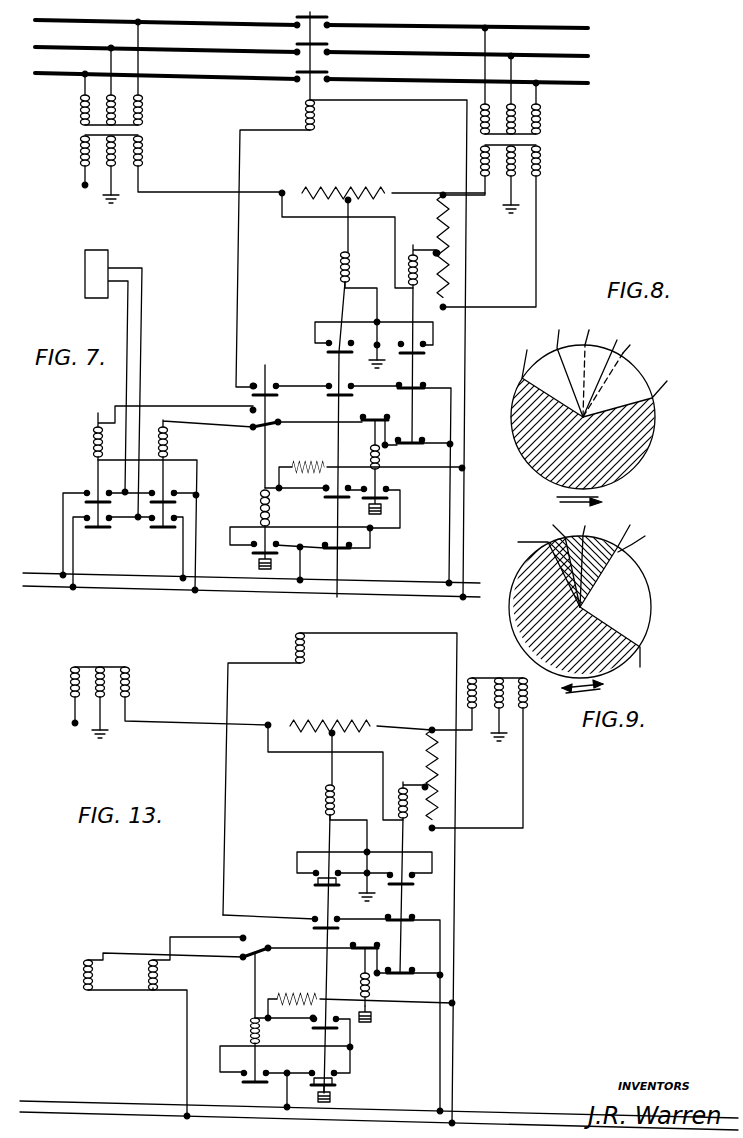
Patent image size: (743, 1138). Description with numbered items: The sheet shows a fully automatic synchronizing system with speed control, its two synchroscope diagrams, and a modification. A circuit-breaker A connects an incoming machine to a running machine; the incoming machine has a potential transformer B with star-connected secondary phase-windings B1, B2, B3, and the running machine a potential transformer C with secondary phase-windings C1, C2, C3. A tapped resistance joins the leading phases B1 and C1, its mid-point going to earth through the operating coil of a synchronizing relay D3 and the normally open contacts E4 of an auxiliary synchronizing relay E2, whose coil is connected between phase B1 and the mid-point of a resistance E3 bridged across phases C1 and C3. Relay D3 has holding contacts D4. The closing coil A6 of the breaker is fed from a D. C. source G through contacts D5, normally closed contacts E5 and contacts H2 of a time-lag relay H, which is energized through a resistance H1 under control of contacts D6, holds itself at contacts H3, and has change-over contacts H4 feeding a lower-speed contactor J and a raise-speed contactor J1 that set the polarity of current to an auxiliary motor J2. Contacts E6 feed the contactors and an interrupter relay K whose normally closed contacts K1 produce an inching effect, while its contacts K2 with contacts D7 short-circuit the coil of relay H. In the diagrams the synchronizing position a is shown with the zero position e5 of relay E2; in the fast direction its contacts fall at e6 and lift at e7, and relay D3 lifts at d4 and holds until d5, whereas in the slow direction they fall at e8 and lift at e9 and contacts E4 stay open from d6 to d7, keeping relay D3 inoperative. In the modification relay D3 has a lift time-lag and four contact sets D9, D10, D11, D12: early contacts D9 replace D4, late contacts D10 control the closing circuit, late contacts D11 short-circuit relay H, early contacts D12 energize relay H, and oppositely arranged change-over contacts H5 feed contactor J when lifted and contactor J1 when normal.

In FIG. 7, the circuit-breaker A is at (300, 73).
In FIG. 7, the closing coil A6 is at (317, 116).
In FIG. 13, the closing coil A6 is at (296, 650).
In FIG. 7, the potential transformer B is at (82, 128).
In FIG. 7, the secondary phase-winding B1 is at (143, 142).
In FIG. 13, the secondary phase-winding B1 is at (130, 687).
In FIG. 7, the secondary phase-winding B2 is at (100, 155).
In FIG. 13, the secondary phase-winding B2 is at (103, 675).
In FIG. 7, the secondary phase-winding B3 is at (78, 147).
In FIG. 13, the secondary phase-winding B3 is at (73, 677).
In FIG. 7, the potential transformer C is at (538, 139).
In FIG. 7, the secondary phase-winding C1 is at (483, 163).
In FIG. 13, the secondary phase-winding C1 is at (472, 692).
In FIG. 7, the secondary phase-winding C2 is at (537, 163).
In FIG. 13, the secondary phase-winding C2 is at (501, 705).
In FIG. 7, the secondary phase-winding C3 is at (538, 150).
In FIG. 13, the secondary phase-winding C3 is at (527, 695).
In FIG. 7, the synchronizing relay D3 is at (337, 267).
In FIG. 13, the synchronizing relay D3 is at (320, 792).
In FIG. 7, the holding contacts D4 is at (327, 343).
In FIG. 7, the normally open contacts D5 is at (327, 390).
In FIG. 7, the contacts D6 is at (346, 575).
In FIG. 7, the contacts D7 is at (323, 500).
In FIG. 13, the early-acting contacts D9 is at (313, 873).
In FIG. 13, the late-acting contacts D10 is at (313, 920).
In FIG. 13, the late-acting contacts D11 is at (343, 1022).
In FIG. 13, the early-acting contacts D12 is at (350, 1072).
In FIG. 7, the auxiliary synchronizing relay E2 is at (418, 268).
In FIG. 13, the auxiliary synchronizing relay E2 is at (405, 802).
In FIG. 7, the resistance E3 is at (447, 232).
In FIG. 13, the resistance E3 is at (434, 765).
In FIG. 7, the normally open contacts E4 is at (425, 350).
In FIG. 13, the normally open contacts E4 is at (420, 884).
In FIG. 7, the normally closed contacts E5 is at (420, 384).
In FIG. 13, the normally closed contacts E5 is at (415, 918).
In FIG. 7, the contacts E6 is at (418, 440).
In FIG. 13, the contacts E6 is at (413, 975).
In FIG. 7, the auxiliary source of D. C. supply G is at (47, 578).
In FIG. 13, the auxiliary source of D. C. supply G is at (67, 1112).
In FIG. 7, the time-lag relay H is at (260, 498).
In FIG. 13, the time-lag relay H is at (252, 1022).
In FIG. 7, the resistance H1 is at (317, 464).
In FIG. 13, the resistance H1 is at (315, 996).
In FIG. 7, the normally open contacts H2 is at (290, 416).
In FIG. 7, the holding contacts H3 is at (253, 562).
In FIG. 13, the holding contacts H3 is at (233, 1087).
In FIG. 7, the change-over contacts H4 is at (260, 429).
In FIG. 13, the change-over contacts H5 is at (243, 938).
In FIG. 7, the lower-speed contactor J is at (168, 430).
In FIG. 13, the lower-speed contactor J is at (148, 978).
In FIG. 7, the raise-speed contactor J1 is at (95, 431).
In FIG. 13, the raise-speed contactor J1 is at (80, 968).
In FIG. 7, the auxiliary motor J2 is at (90, 265).
In FIG. 7, the interrupter relay K is at (358, 453).
In FIG. 13, the interrupter relay K is at (367, 983).
In FIG. 7, the normally closed contacts K1 is at (381, 413).
In FIG. 13, the normally closed contacts K1 is at (368, 945).
In FIG. 7, the normally open contacts K2 is at (390, 502).
In FIG. 8, the synchronizing position a is at (592, 362).
In FIG. 9, the synchronizing position a is at (590, 557).
In FIG. 9, the contact-lift position d4 is at (538, 569).
In FIG. 9, the normal fall position d5 is at (642, 536).
In FIG. 8, the inoperative-period start d6 is at (611, 365).
In FIG. 8, the inoperative-period end d7 is at (570, 362).
In FIG. 8, the zero position e5 is at (615, 380).
In FIG. 9, the zero position e5 is at (612, 555).
In FIG. 9, the contact-fall position e6 is at (557, 557).
In FIG. 9, the contact-lift position e7 is at (616, 647).
In FIG. 8, the contact-fall position e8 is at (634, 389).
In FIG. 8, the contact-lift position e9 is at (552, 372).